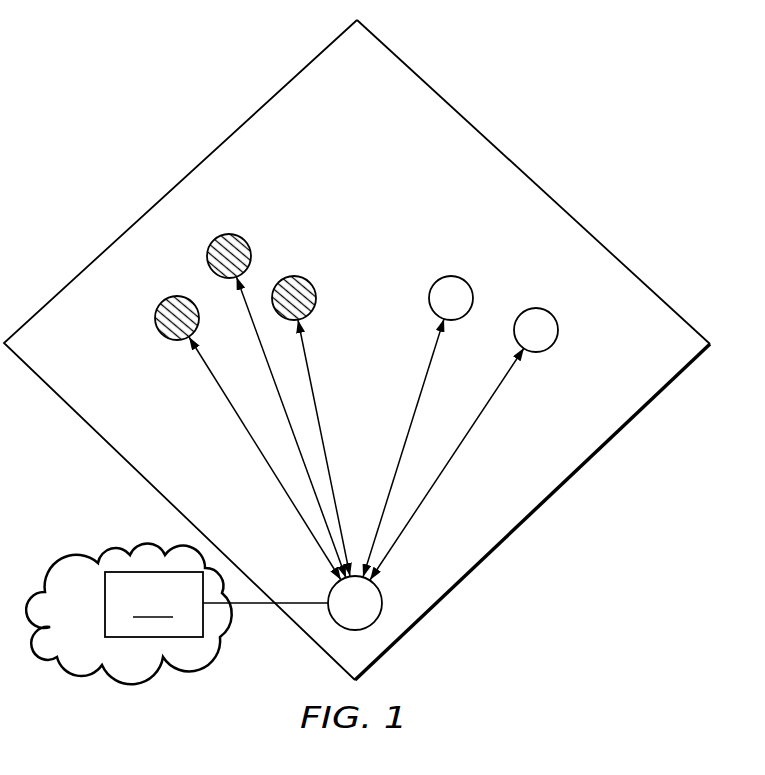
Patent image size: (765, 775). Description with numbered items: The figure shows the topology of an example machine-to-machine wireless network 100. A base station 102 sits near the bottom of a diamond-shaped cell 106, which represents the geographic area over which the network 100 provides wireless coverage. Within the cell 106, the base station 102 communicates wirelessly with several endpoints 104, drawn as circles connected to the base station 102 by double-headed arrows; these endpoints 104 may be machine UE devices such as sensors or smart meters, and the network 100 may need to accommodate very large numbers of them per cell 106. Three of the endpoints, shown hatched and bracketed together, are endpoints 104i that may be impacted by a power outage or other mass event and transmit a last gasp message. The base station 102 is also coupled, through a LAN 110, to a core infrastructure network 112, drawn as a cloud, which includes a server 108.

The machine-to-machine wireless network 100 is at (211, 67).
The base station 102 is at (383, 593).
The endpoints 104 is at (376, 267).
The impacted endpoints 104i is at (326, 230).
The cell 106 is at (518, 167).
The server 108 is at (173, 617).
The LAN 110 is at (250, 605).
The core infrastructure network 112 is at (118, 685).